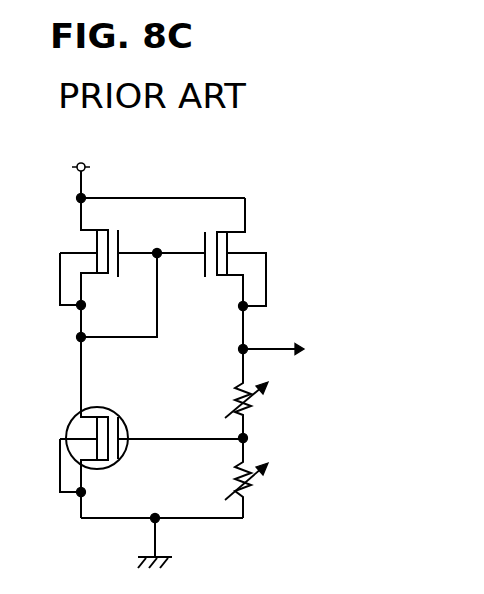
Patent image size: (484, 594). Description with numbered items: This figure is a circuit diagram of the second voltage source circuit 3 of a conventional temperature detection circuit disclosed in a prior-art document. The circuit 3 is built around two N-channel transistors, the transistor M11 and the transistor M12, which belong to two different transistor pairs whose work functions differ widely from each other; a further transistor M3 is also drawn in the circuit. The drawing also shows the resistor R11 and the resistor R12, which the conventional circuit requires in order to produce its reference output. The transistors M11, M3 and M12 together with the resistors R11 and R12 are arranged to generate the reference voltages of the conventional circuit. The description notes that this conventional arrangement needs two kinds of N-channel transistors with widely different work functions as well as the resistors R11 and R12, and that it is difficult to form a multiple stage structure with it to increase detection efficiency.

The reference voltage generating circuit 3 is at (278, 187).
The N-channel transistor M11 is at (97, 270).
The PMOS transistor M3 is at (218, 273).
The N-channel transistor M12 is at (138, 427).
The resistor R11 is at (265, 396).
The resistor R12 is at (265, 478).